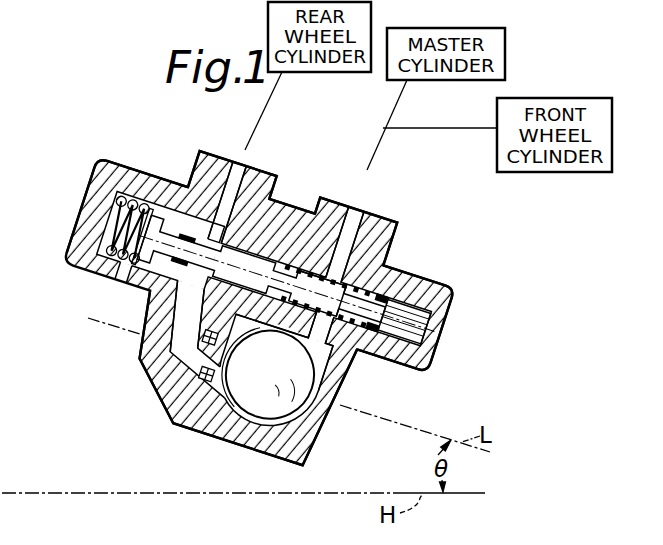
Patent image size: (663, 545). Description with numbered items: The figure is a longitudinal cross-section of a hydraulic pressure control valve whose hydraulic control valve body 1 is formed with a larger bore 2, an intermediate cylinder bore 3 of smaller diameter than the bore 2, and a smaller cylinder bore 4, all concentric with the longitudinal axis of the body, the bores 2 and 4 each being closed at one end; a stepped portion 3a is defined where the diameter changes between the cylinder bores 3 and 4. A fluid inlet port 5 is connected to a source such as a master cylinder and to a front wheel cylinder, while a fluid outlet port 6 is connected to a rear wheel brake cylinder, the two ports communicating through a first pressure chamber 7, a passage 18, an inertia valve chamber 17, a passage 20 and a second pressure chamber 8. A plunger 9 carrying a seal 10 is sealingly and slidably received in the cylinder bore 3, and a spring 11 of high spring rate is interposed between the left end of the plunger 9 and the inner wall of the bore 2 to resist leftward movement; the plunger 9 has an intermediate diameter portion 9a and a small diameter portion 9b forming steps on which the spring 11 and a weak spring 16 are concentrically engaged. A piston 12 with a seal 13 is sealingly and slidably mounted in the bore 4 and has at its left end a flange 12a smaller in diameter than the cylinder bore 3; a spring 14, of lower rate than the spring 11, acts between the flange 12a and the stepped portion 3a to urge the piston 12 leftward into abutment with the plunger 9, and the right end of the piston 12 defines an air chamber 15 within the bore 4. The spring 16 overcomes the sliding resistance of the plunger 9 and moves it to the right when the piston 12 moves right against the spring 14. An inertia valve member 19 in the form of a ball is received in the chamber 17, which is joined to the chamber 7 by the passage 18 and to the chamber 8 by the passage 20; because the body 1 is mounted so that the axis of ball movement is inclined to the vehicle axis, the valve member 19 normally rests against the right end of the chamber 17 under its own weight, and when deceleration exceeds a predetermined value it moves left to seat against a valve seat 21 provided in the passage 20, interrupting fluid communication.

The hydraulic control valve body 1 is at (274, 163).
The larger bore 2 is at (155, 212).
The intermediate cylinder bore 3 is at (263, 240).
The stepped portion 3a is at (345, 252).
The smaller cylinder bore 4 is at (413, 297).
The fluid inlet port 5 is at (364, 188).
The fluid outlet port 6 is at (252, 180).
The first pressure chamber 7 is at (350, 220).
The second pressure chamber 8 is at (222, 165).
The plunger 9 is at (177, 348).
The intermediate diameter portion 9a is at (183, 297).
The small diameter portion 9b is at (130, 258).
The seal 10 is at (290, 215).
The spring 11 is at (142, 205).
The piston 12 is at (362, 355).
The flange 12a is at (331, 198).
The seal 13 is at (377, 290).
The spring 14 is at (325, 400).
The air chamber 15 is at (420, 322).
The spring 16 is at (97, 245).
The inertia valve chamber 17 is at (297, 428).
The passage 18 is at (343, 383).
The inertia valve member 19 is at (242, 395).
The passage 20 is at (165, 375).
The valve seat 21 is at (160, 407).